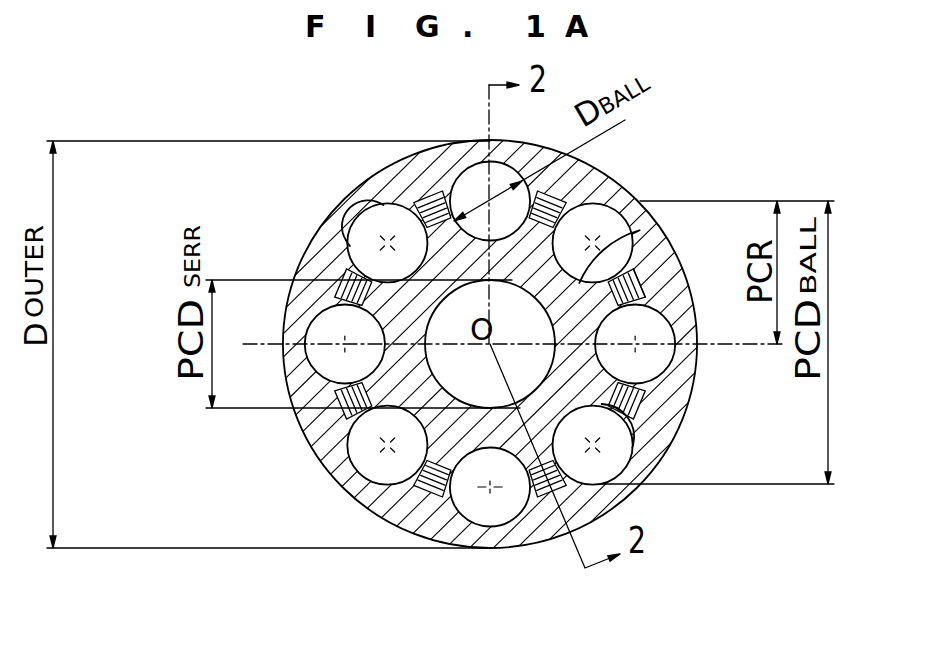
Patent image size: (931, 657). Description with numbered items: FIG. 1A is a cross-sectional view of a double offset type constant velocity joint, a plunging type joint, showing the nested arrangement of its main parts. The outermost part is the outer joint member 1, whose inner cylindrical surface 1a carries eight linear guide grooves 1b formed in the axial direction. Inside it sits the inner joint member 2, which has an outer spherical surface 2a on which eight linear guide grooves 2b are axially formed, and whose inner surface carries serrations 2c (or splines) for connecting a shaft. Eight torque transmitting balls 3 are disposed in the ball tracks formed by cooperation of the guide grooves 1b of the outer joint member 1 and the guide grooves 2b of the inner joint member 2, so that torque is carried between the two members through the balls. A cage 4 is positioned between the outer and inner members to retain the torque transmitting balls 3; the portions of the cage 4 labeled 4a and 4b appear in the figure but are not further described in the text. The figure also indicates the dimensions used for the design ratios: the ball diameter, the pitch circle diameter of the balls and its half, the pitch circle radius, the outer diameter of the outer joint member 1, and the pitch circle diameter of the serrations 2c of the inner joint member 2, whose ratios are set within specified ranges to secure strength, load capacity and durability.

The outer joint member 1 is at (396, 174).
The inner cylindrical surface 1a is at (364, 208).
The linear guide grooves 1b is at (350, 239).
The inner joint member 2 is at (570, 319).
The outer spherical surface 2a is at (645, 270).
The linear guide grooves 2b is at (640, 231).
The serrations 2c is at (490, 281).
The torque transmitting balls 3 is at (473, 178).
The cage 4 is at (648, 382).
The pocket of cage 4a is at (630, 438).
The pocket inner wall of cage 4b is at (640, 404).